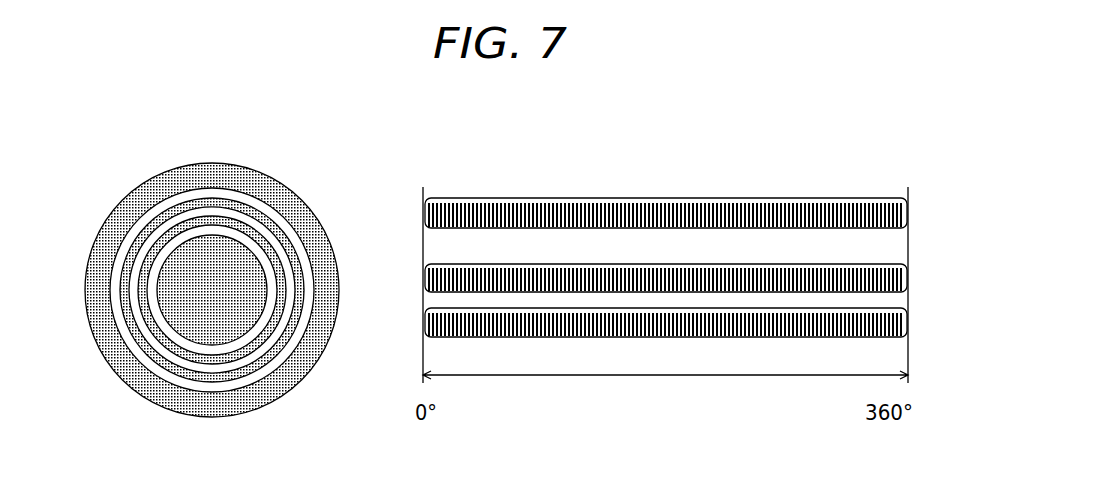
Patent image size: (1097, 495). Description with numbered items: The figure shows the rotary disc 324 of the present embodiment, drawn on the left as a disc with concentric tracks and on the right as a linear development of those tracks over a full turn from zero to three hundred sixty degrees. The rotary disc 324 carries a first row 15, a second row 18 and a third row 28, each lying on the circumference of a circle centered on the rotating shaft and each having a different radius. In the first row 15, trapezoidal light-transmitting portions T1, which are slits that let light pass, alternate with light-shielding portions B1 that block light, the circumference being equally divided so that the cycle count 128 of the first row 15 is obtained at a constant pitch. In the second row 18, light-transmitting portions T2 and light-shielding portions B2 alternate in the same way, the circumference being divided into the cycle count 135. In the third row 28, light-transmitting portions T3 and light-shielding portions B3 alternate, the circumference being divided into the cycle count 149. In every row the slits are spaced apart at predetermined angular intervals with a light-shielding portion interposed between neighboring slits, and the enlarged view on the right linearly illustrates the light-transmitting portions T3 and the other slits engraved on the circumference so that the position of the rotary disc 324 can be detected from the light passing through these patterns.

The rotary disc 324 is at (253, 288).
The third row 28 is at (181, 196).
The second row 18 is at (207, 208).
The first row 15 is at (245, 233).
The number of cycles P of the third row 149 is at (671, 197).
The number of cycles N of the second row 135 is at (671, 263).
The number of cycles M of the first row 128 is at (671, 338).
The light-transmitting portion T3 is at (560, 213).
The light-shielding portion B3 is at (607, 217).
The light-transmitting portion T2 is at (723, 280).
The light-shielding portion B2 is at (773, 278).
The light-transmitting portion T1 is at (822, 318).
The light-shielding portion B1 is at (865, 320).